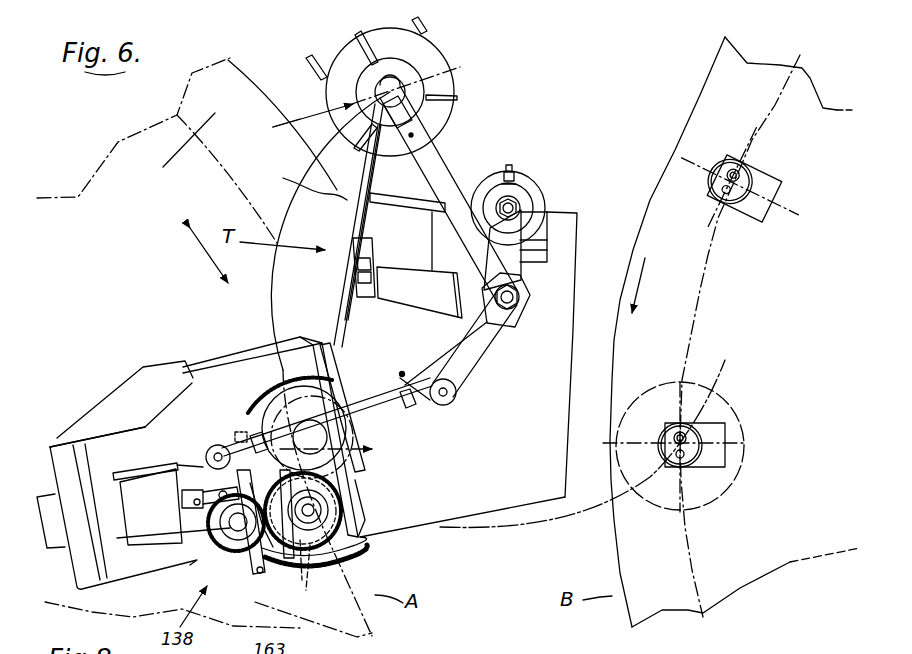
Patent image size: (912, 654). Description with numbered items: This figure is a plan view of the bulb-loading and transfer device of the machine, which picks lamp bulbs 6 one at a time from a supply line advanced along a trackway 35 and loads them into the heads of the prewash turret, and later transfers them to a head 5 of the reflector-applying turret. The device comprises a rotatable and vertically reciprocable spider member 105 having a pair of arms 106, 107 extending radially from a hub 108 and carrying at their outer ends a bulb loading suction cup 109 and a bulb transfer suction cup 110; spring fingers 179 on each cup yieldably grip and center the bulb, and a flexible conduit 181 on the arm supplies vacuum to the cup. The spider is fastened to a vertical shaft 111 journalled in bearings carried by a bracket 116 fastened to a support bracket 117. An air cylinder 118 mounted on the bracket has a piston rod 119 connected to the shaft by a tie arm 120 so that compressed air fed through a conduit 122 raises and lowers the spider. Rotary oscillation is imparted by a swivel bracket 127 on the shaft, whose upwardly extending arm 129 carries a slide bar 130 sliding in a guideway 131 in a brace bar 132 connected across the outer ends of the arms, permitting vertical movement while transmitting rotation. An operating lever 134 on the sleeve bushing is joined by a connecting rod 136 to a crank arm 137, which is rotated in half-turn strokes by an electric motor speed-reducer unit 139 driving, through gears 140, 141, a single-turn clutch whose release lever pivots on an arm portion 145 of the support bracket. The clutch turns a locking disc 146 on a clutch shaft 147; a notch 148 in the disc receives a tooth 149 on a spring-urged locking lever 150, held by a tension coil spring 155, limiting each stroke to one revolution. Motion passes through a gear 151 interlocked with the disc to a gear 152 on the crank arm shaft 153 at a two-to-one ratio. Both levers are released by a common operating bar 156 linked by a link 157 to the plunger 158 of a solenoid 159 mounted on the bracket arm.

The head 5 is at (717, 168).
The lamp bulb 6 is at (444, 58).
The trackway 35 is at (308, 70).
The spider or transfer arm member 105 is at (446, 171).
The arm 106 is at (500, 168).
The arm 107 is at (468, 339).
The hub 108 is at (522, 293).
The bulb loading suction cup 109 is at (278, 126).
The bulb transfer suction cup 110 is at (377, 452).
The vertical shaft 111 is at (519, 301).
The bracket 116 is at (534, 255).
The support bracket 117 is at (160, 361).
The air cylinder 118 is at (518, 181).
The piston rod 119 is at (516, 204).
The tie arm 120 is at (526, 238).
The conduit 122 is at (518, 165).
The swivel bracket 127 is at (455, 303).
The upwardly extending arm 129 is at (372, 256).
The slide bar 130 is at (352, 286).
The guideway 131 is at (354, 270).
The tie or brace bar 132 is at (290, 178).
The operating lever 134 is at (468, 372).
The connecting rod 136 is at (408, 416).
The crank arm 137 is at (250, 417).
The electric motor speed-reducer unit 139 is at (152, 570).
The gear 140 is at (217, 552).
The gear 141 is at (319, 570).
The arm portion 145 is at (170, 400).
The locking disc 146 is at (328, 570).
The clutch shaft 147 is at (328, 505).
The notch 148 is at (254, 563).
The tooth 149 is at (288, 562).
The locking lever 150 is at (243, 553).
The gear 151 is at (306, 592).
The gear 152 is at (266, 391).
The crank arm shaft 153 is at (248, 432).
The tension coil spring 155 is at (373, 557).
The operating rod or bar 156 is at (196, 456).
The link 157 is at (206, 455).
The plunger 158 is at (178, 521).
The solenoid 159 is at (130, 522).
The spring fingers 179 is at (360, 50).
The flexible conduit 181 is at (430, 133).